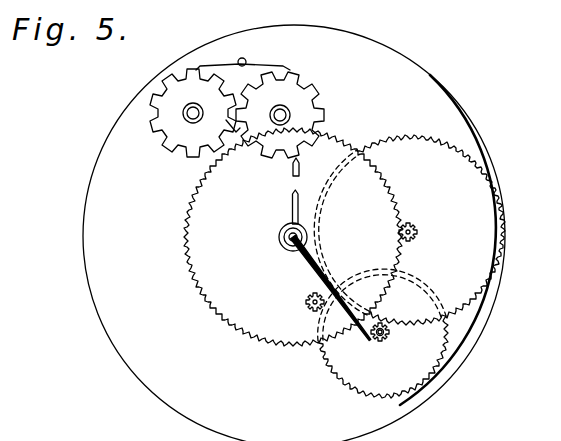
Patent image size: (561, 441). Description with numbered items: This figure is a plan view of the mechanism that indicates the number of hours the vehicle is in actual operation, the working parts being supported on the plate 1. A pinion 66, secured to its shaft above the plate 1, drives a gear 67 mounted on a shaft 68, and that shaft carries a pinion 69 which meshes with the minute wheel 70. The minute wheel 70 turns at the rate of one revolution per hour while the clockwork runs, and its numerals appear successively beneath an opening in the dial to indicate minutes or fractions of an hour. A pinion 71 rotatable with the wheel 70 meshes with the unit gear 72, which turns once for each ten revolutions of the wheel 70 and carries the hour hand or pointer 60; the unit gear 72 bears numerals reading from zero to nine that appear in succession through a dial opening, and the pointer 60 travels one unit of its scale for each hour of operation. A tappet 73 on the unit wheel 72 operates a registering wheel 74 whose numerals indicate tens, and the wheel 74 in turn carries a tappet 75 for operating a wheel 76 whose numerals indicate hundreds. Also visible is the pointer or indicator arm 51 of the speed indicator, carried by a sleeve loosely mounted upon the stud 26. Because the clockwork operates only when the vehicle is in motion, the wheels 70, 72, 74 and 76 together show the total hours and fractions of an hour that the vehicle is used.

The plate 1 is at (294, 233).
The stud 26 is at (283, 250).
The pointer or indicator arm 51 is at (327, 273).
The hour hand or pointer 60 is at (291, 211).
The pinion 66 is at (306, 300).
The gear 67 is at (343, 367).
The shaft 68 is at (388, 336).
The pinion 69 is at (381, 342).
The minute wheel 70 is at (470, 165).
The pinion 71 is at (416, 235).
The unit gear 72 is at (293, 240).
The tappet 73 is at (290, 176).
The registering wheel 74 is at (320, 98).
The tappet 75 is at (237, 135).
The wheel 76 is at (165, 142).